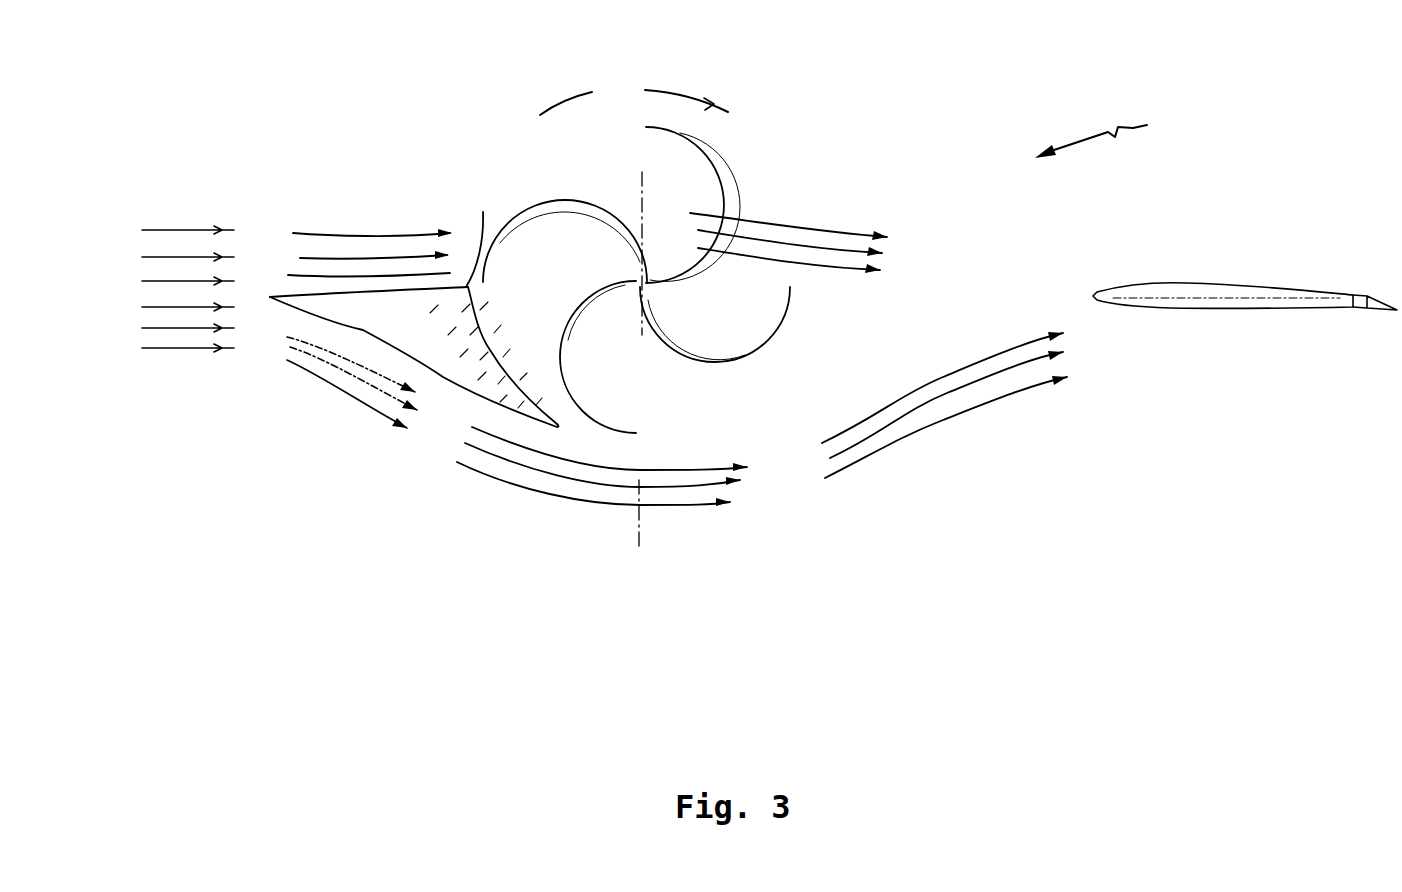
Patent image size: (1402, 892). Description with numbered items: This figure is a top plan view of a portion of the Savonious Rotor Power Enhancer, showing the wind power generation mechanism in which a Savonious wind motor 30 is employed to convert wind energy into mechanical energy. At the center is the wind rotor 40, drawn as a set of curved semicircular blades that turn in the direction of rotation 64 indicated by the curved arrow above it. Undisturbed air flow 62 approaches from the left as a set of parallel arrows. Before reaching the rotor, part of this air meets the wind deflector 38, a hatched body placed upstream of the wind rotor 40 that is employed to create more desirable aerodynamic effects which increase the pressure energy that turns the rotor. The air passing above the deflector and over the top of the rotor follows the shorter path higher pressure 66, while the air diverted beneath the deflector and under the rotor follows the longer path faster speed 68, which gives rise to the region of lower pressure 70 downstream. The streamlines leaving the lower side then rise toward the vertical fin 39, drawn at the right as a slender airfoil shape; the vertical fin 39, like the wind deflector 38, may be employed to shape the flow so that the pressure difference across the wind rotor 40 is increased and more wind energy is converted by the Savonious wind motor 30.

The Savonious wind motor 30 is at (1113, 138).
The wind deflector 38 is at (483, 212).
The vertical fin 39 is at (1290, 312).
The wind rotor 40 is at (727, 173).
The undisturbed air flow 62 is at (150, 289).
The rotation 64 is at (634, 94).
The shorter path higher pressure 66 is at (836, 231).
The longer path faster speed 68 is at (602, 496).
The lower pressure 70 is at (912, 449).